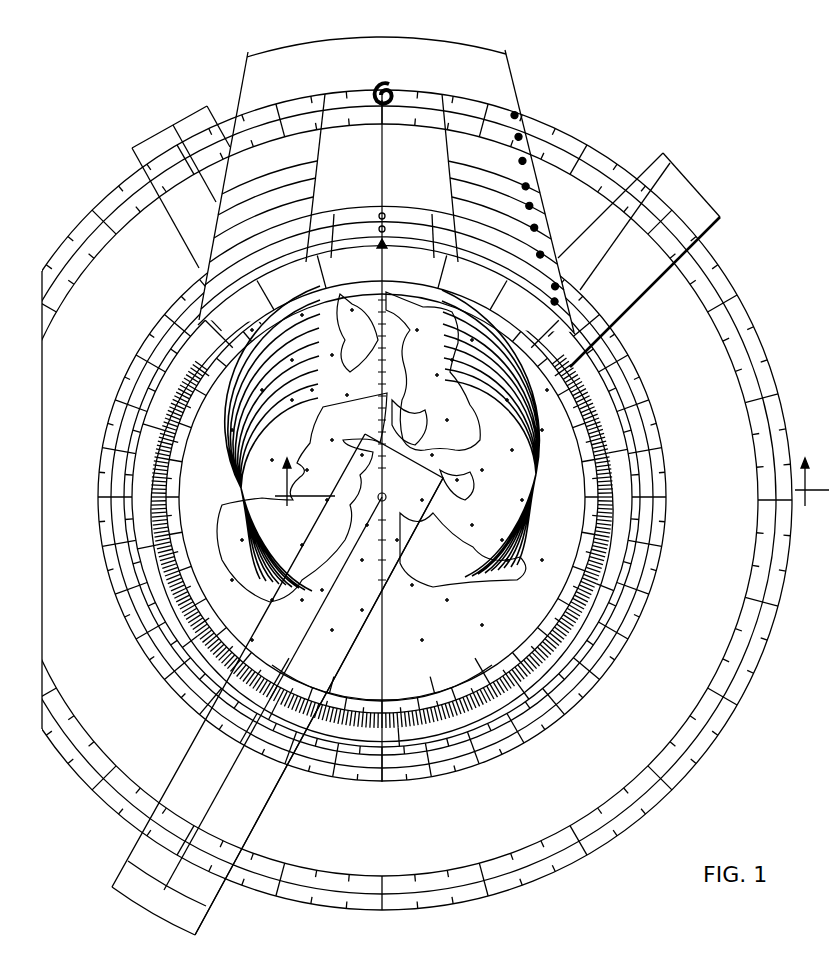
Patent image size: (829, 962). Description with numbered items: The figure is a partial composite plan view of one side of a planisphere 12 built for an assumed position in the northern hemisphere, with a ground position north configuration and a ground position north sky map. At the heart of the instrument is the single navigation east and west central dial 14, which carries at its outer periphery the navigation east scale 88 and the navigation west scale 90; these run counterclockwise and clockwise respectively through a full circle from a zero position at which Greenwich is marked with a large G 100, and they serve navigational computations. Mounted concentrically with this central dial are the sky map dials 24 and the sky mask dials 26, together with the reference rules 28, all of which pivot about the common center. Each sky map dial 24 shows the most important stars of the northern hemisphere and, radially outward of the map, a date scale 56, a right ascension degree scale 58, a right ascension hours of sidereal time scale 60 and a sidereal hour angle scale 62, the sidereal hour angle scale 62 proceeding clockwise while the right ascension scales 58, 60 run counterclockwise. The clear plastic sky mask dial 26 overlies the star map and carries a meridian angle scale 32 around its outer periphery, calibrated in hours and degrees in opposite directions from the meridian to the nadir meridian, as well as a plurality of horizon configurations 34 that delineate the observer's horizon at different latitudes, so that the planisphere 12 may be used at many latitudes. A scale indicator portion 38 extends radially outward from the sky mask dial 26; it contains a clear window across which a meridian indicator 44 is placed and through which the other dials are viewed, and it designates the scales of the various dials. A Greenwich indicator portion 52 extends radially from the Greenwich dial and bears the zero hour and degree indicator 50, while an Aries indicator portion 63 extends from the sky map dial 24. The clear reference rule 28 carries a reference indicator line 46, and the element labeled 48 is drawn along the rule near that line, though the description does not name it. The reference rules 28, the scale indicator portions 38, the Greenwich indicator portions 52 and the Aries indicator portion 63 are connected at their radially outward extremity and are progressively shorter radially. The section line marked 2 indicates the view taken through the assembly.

The planisphere 12 is at (678, 111).
The navigation east and west central dial 14 is at (85, 782).
The sky map dial 24 is at (553, 726).
The sky mask dial 26 is at (645, 580).
The reference rule 28 is at (163, 926).
The meridian angle scale 32 is at (326, 312).
The horizon configurations 34 is at (478, 590).
The scale indicator portion 38 is at (470, 50).
The meridian indicator 44 is at (379, 214).
The reference indicator line 46 is at (172, 876).
The reference arm 48 is at (311, 620).
The zero hour and degree indicator 50 is at (700, 238).
The Greenwich indicator portion 52 is at (709, 214).
The date scale 56 is at (525, 643).
The right ascension degree scale 58 is at (614, 587).
The right ascension hours of sidereal time scale 60 is at (640, 553).
The sidereal hour angle scale 62 is at (668, 479).
The Aries indicator portion 63 is at (163, 127).
The navigation east scale 88 is at (406, 506).
The navigation west scale 90 is at (770, 357).
The large G 100 is at (384, 80).
The section line 2- 2 is at (548, 482).